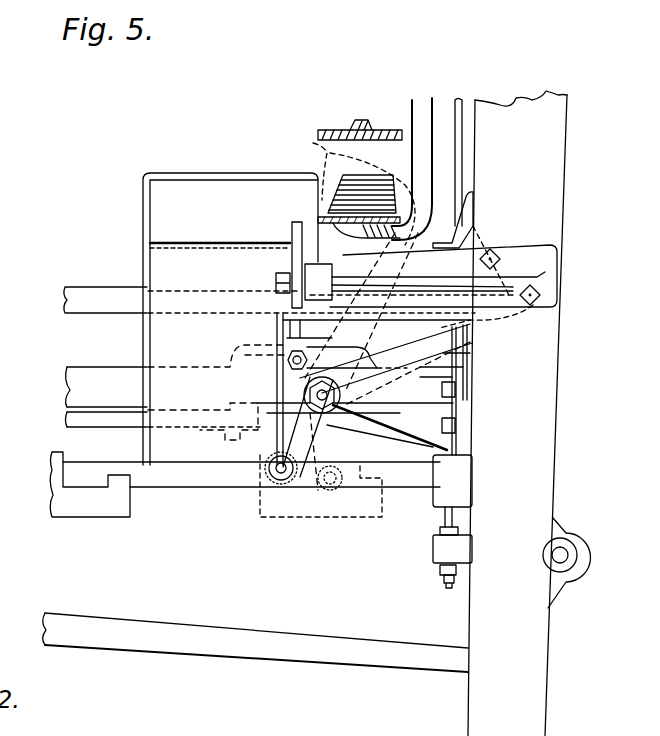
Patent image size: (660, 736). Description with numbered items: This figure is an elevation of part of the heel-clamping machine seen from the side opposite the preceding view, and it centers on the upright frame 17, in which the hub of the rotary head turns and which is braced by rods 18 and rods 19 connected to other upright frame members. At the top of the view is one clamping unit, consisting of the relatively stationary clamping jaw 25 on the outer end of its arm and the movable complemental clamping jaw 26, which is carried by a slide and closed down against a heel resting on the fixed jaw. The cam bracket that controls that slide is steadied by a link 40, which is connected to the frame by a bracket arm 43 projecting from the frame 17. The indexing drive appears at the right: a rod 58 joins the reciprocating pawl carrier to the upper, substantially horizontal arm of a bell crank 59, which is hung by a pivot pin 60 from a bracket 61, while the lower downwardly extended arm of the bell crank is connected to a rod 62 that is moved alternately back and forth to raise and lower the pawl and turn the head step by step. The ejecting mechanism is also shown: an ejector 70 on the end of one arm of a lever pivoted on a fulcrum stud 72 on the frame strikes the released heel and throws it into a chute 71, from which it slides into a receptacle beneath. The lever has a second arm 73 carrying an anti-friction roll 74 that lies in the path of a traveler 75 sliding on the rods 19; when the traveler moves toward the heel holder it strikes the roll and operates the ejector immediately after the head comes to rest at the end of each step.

The upright frame 17 is at (517, 413).
The brace rod 18 is at (67, 302).
The brace rod 19 is at (168, 482).
The stationary clamping jaw 25 is at (354, 216).
The movable clamping jaw 26 is at (323, 131).
The link 40 is at (292, 229).
The bracket arm 43 is at (437, 283).
The rod 58 is at (462, 100).
The bell crank 59 is at (440, 553).
The pivot pin 60 is at (563, 556).
The bracket 61 is at (558, 528).
The rod 62 is at (305, 655).
The ejector 70 is at (477, 212).
The chute 71 is at (150, 236).
The fulcrum stud 72 is at (306, 395).
The second arm 73 is at (327, 425).
The anti-friction roll 74 is at (278, 470).
The traveler 75 is at (64, 508).